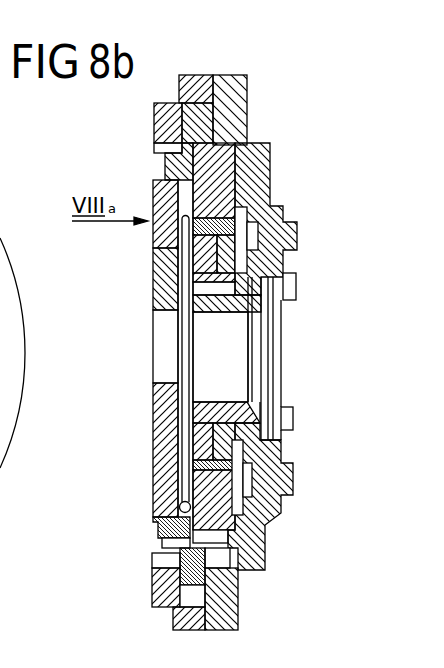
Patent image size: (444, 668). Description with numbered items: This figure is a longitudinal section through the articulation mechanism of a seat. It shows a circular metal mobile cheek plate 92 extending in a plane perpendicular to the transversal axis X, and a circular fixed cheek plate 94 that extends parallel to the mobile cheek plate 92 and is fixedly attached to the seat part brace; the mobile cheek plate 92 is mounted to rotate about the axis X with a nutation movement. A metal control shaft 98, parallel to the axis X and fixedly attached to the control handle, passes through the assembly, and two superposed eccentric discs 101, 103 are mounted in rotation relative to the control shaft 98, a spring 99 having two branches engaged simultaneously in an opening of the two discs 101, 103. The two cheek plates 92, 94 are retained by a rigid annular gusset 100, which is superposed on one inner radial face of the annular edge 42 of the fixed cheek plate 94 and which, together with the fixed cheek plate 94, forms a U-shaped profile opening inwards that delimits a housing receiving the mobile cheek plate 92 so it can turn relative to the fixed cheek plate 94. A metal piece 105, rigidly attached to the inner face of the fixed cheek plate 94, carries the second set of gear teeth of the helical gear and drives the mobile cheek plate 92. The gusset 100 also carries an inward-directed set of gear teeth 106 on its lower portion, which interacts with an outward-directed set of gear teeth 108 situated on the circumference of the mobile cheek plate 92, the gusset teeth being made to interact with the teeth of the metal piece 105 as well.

The annular edge 42 is at (225, 95).
The mobile cheek plate 92 is at (160, 492).
The fixed cheek plate 94 is at (220, 598).
The control shaft 98 is at (225, 348).
The spring 99 is at (185, 397).
The annular gusset 100 is at (148, 604).
The eccentric disc 101 is at (193, 248).
The eccentric disc 103 is at (193, 273).
The metal piece 105 is at (237, 150).
The set of gear teeth 106 is at (162, 559).
The set of gear teeth 108 is at (162, 540).